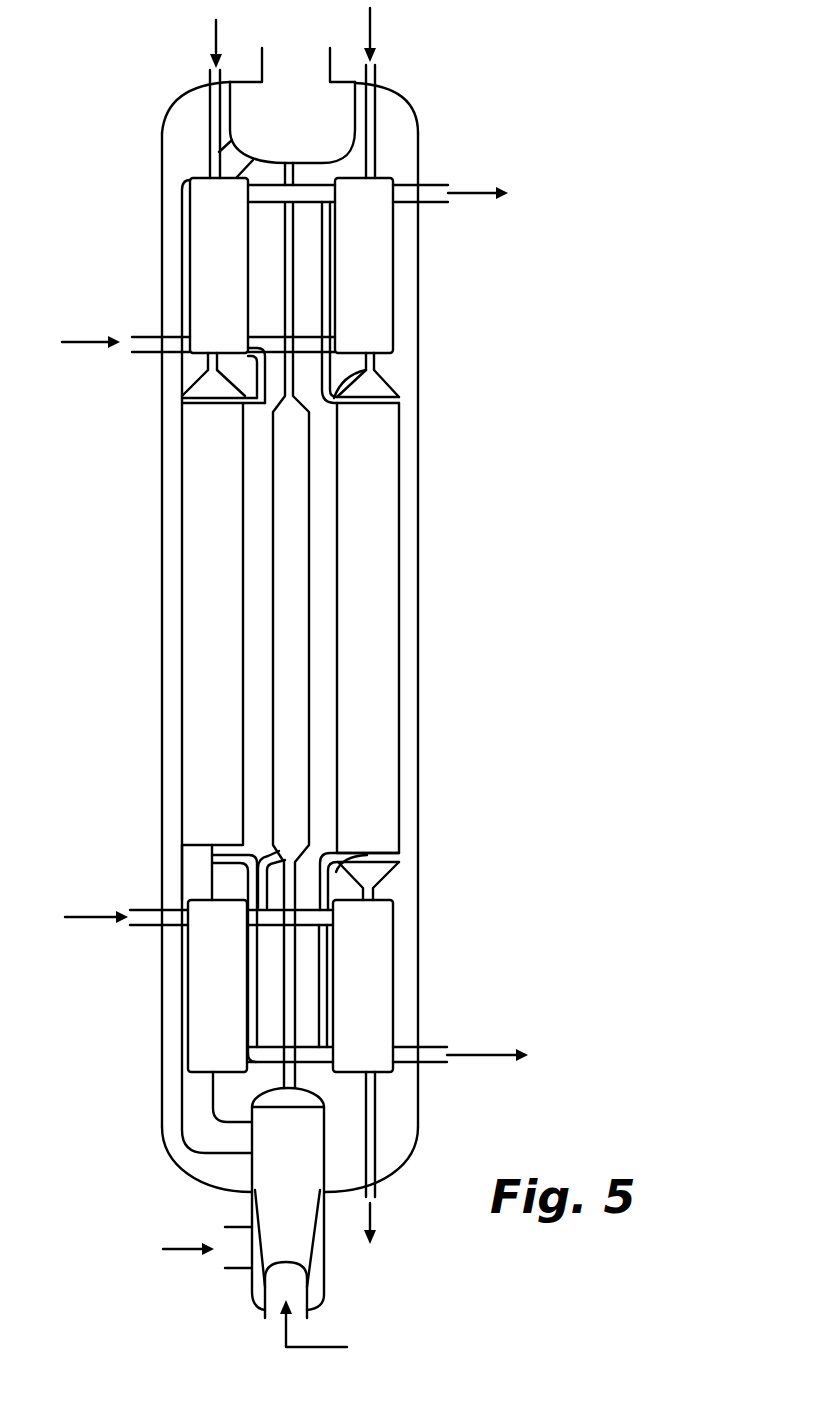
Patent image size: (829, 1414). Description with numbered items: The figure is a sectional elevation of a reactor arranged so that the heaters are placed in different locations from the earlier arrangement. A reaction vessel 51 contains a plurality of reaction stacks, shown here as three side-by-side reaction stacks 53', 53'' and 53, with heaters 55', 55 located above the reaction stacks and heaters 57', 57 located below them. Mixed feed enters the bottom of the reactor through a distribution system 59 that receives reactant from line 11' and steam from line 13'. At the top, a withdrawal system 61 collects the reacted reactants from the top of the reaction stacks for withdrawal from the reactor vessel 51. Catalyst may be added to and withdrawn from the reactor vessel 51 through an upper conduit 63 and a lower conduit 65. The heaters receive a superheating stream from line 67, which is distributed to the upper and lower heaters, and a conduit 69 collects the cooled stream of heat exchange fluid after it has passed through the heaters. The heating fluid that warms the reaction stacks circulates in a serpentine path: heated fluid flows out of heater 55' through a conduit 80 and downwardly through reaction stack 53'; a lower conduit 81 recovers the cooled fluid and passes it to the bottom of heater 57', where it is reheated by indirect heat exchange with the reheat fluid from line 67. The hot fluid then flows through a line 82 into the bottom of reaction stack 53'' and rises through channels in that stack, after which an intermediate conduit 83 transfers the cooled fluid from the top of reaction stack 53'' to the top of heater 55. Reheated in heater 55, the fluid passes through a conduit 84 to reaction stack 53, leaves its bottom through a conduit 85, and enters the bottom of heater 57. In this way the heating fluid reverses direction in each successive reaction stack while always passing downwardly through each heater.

The reaction vessel 51 is at (426, 487).
The reaction stack 53 is at (408, 628).
The reaction stack 53' is at (186, 621).
The reaction stack 53'' is at (207, 645).
The heater 55 is at (407, 265).
The heater 55' is at (185, 265).
The heater 57 is at (404, 986).
The heater 57' is at (173, 986).
The distribution system 59 is at (232, 1170).
The withdrawal system 61 is at (337, 77).
The upper conduit 63 is at (297, 175).
The lower conduit 65 is at (294, 1078).
The line 67 is at (85, 340).
The conduit 69 is at (438, 184).
The conduit 80 is at (263, 405).
The lower conduit 81 is at (252, 867).
The line 82 is at (270, 858).
The intermediate conduit 83 is at (330, 272).
The conduit 84 is at (376, 363).
The conduit 85 is at (338, 870).
The line 11' is at (192, 1262).
The line 13' is at (323, 1268).